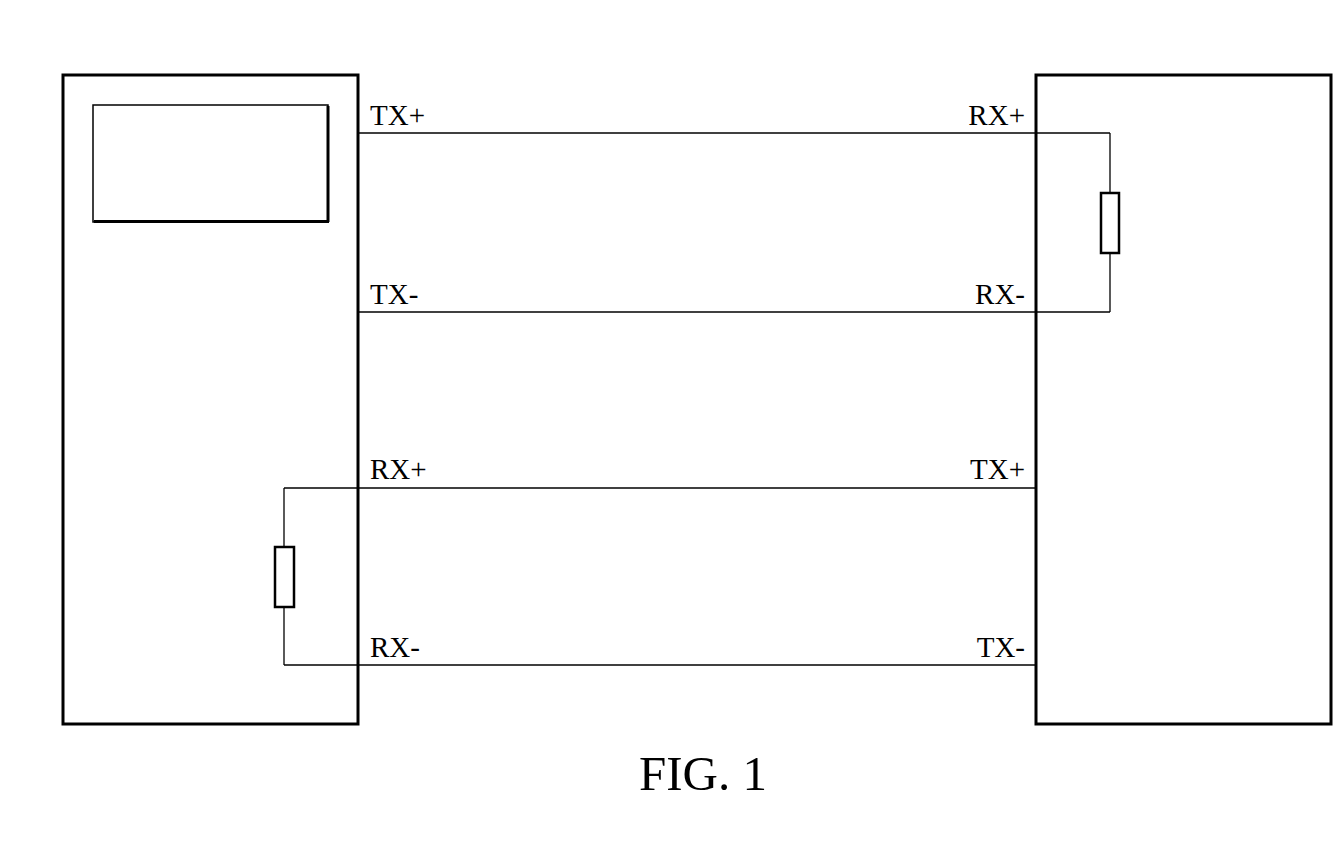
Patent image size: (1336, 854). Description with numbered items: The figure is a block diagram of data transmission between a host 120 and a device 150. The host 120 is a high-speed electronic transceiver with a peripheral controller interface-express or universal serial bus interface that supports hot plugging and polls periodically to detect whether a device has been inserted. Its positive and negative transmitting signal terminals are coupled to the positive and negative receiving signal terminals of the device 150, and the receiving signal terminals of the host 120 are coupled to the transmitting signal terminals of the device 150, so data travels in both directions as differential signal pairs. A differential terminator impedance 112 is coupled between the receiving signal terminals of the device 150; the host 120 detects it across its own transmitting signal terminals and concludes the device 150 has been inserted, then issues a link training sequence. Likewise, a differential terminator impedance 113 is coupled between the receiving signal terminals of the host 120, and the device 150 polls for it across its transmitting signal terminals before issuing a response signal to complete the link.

The host 120 is at (205, 74).
The device 150 is at (1180, 74).
The differential terminator impedance 112 is at (1120, 217).
The differential terminator impedance 113 is at (274, 573).